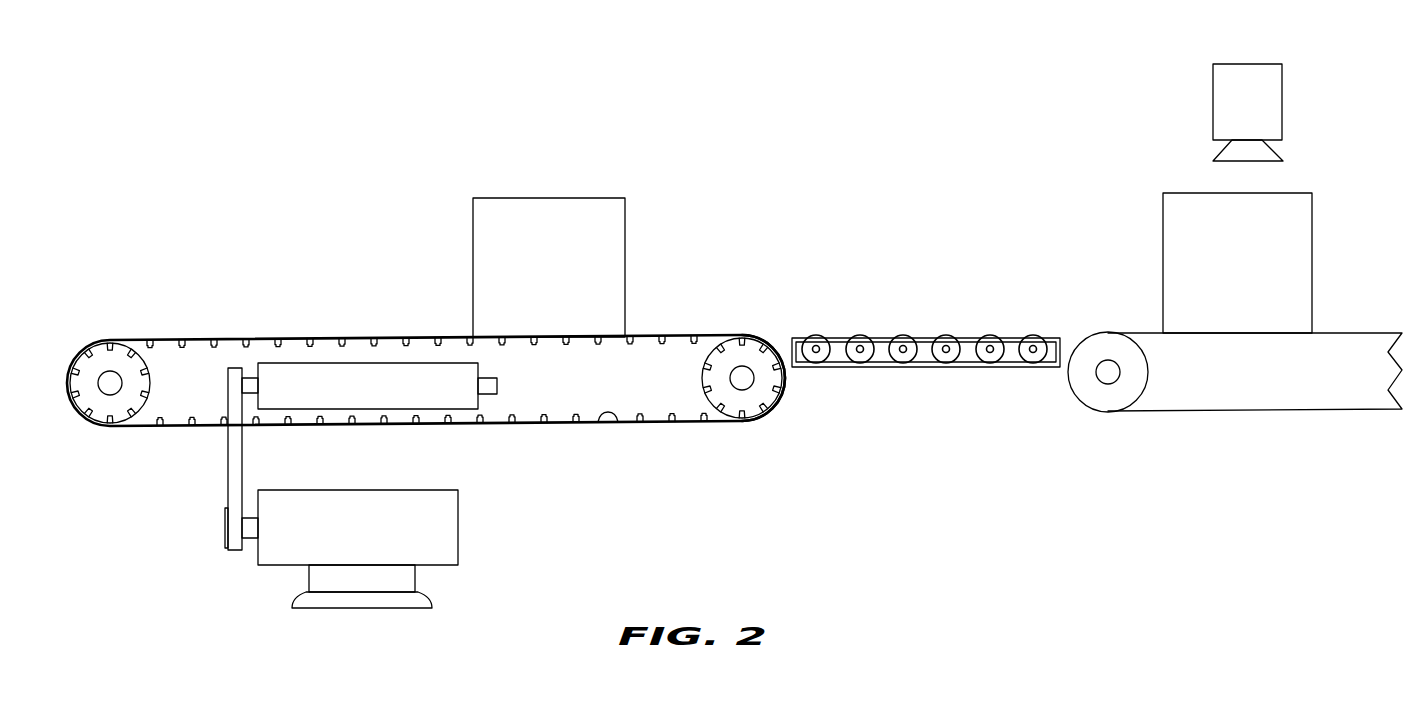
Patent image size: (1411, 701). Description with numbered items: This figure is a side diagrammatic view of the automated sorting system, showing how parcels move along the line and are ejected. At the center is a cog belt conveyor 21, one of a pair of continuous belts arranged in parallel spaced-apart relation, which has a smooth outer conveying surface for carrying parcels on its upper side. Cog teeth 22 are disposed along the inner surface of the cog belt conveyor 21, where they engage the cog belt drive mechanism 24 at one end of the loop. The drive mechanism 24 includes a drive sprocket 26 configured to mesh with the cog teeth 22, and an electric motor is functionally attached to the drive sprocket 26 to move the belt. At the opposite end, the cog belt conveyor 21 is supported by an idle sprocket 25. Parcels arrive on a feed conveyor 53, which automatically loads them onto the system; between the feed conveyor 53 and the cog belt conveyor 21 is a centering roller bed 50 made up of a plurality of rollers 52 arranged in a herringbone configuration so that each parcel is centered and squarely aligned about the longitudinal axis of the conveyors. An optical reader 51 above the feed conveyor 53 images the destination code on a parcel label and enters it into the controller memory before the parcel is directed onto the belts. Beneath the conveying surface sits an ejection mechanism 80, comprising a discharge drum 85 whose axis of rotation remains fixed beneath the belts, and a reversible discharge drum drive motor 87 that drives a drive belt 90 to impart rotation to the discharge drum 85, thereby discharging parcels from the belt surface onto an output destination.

The cog belt conveyor 21 is at (682, 337).
The cog teeth 22 is at (614, 421).
The cog belt drive mechanism 24 is at (778, 405).
The idle sprocket 25 is at (88, 402).
The drive sprocket 26 is at (722, 397).
The centering roller bed 50 is at (925, 338).
The optical reader 51 is at (1282, 78).
The rollers 52 is at (947, 363).
The feed conveyor 53 is at (1343, 410).
The ejection mechanism 80 is at (499, 396).
The discharge drum 85 is at (376, 401).
The discharge drum drive motor 87 is at (366, 540).
The drive belt 90 is at (232, 463).